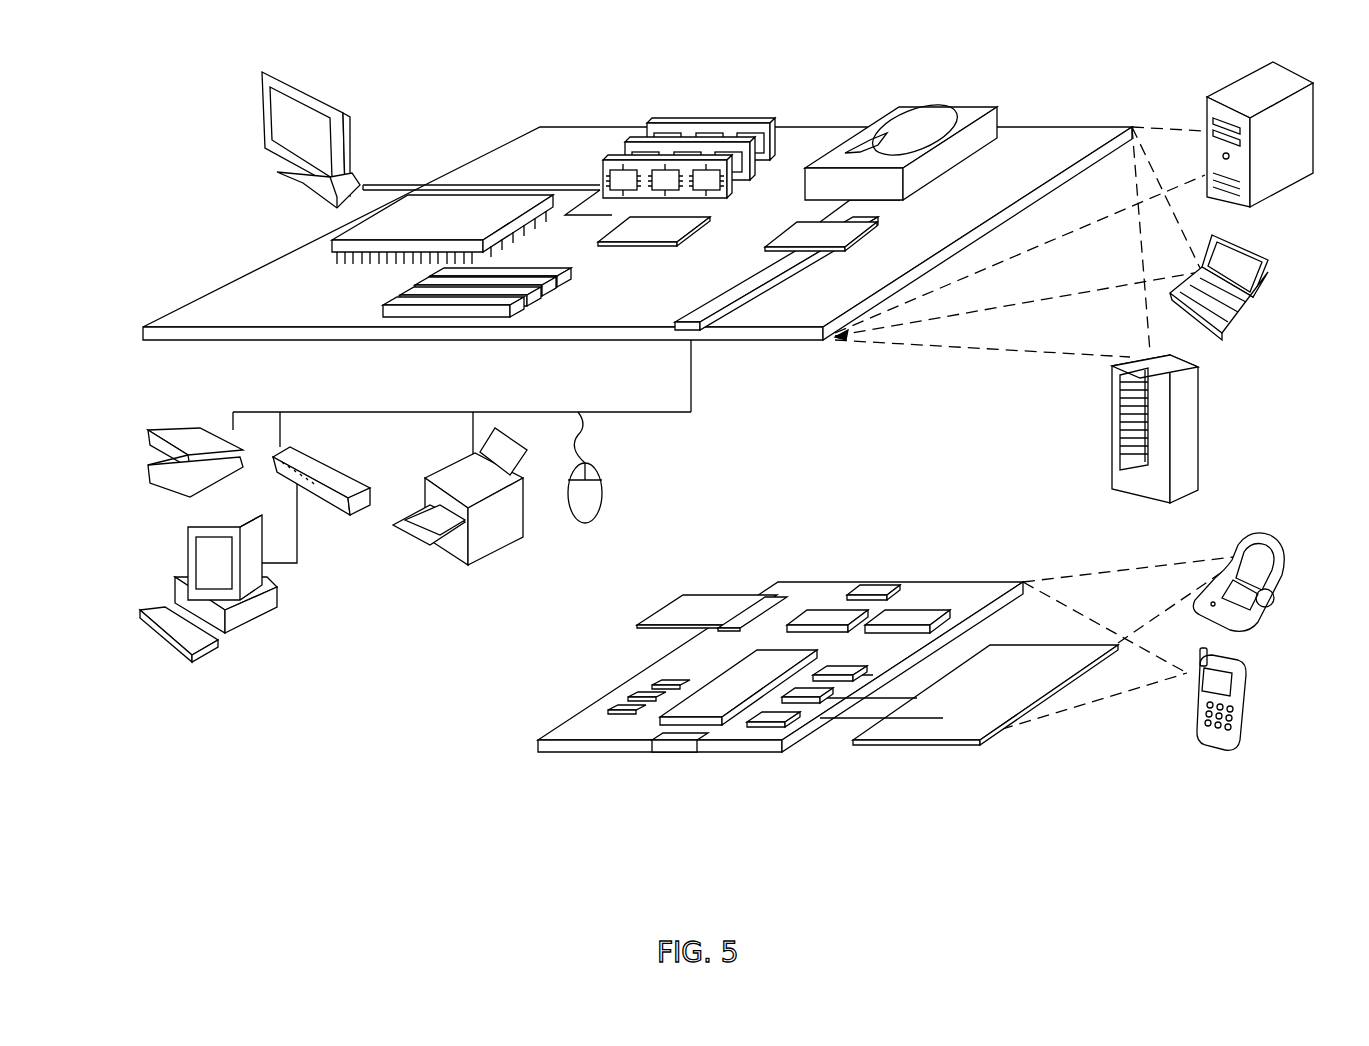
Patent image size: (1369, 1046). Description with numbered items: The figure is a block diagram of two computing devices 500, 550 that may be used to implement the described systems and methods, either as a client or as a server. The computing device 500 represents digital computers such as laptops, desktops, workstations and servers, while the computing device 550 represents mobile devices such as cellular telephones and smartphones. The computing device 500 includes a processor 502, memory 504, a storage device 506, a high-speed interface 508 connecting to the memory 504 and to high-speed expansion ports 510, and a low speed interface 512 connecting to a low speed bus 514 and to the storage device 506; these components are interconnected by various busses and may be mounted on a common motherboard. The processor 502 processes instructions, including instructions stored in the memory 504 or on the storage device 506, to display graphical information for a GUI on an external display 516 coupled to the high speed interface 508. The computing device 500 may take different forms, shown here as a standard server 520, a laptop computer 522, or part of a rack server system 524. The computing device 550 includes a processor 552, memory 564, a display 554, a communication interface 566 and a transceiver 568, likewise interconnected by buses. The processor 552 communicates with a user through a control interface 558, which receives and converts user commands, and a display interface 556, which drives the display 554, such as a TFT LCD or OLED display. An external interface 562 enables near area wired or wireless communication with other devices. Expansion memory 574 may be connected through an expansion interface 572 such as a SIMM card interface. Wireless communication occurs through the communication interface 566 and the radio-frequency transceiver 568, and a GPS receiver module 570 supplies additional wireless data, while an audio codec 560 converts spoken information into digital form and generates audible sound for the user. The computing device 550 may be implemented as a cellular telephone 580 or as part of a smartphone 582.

The computing device 500 is at (457, 101).
The processor 502 is at (330, 243).
The memory 504 is at (660, 123).
The storage device 506 is at (895, 120).
The high-speed interface 508 is at (600, 233).
The high-speed expansion ports 510 is at (395, 300).
The low speed interface 512 is at (803, 230).
The low speed bus 514 is at (705, 340).
The display 516 is at (268, 78).
The standard server 520 is at (1207, 113).
The laptop computer 522 is at (1272, 265).
The rack server system 524 is at (1110, 450).
The computing device 550 is at (511, 753).
The processor 552 is at (712, 712).
The display 554 is at (945, 723).
The display interface 556 is at (780, 722).
The control interface 558 is at (820, 703).
The audio codec 560 is at (842, 685).
The external interface 562 is at (677, 740).
The memory 564 is at (630, 702).
The communication interface 566 is at (832, 617).
The transceiver 568 is at (908, 615).
The GPS receiver module 570 is at (883, 588).
The expansion interface 572 is at (763, 595).
The expansion memory 574 is at (683, 596).
The cellular telephone 580 is at (1243, 542).
The smartphone 582 is at (1197, 707).